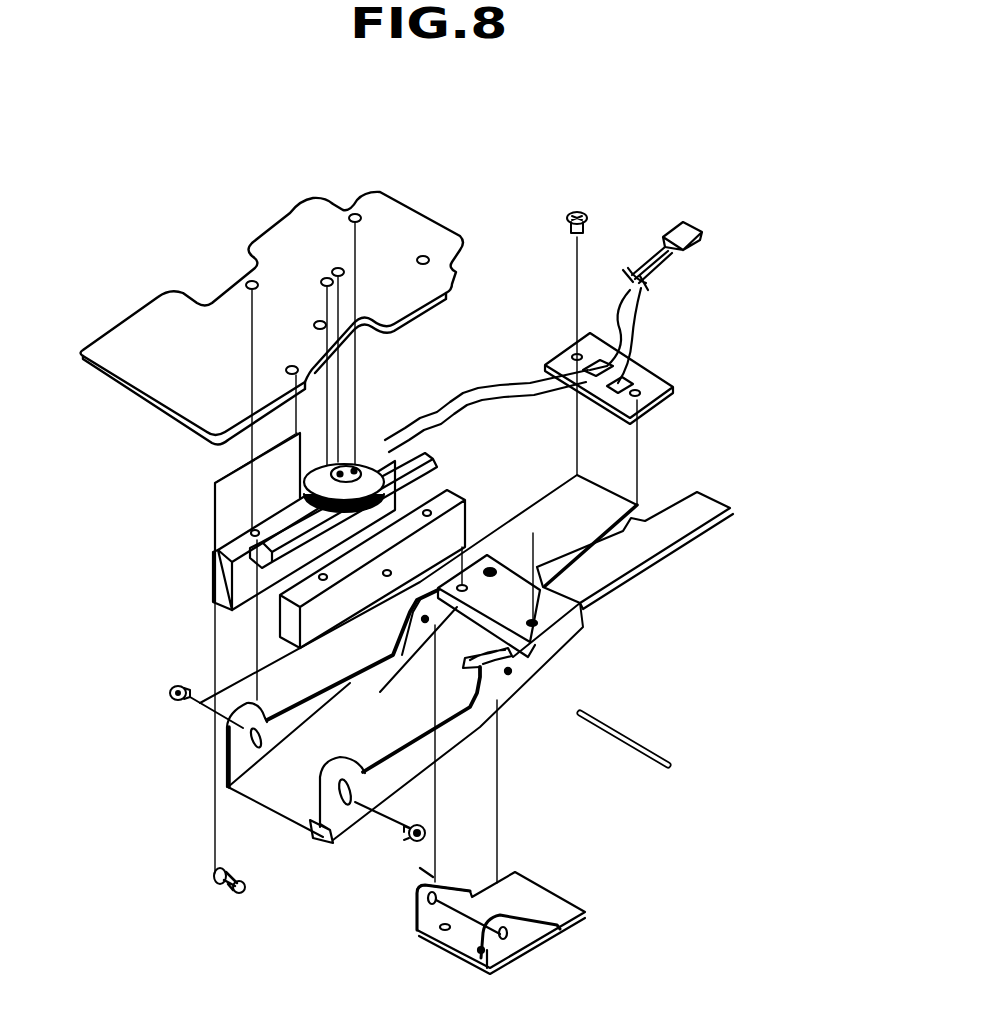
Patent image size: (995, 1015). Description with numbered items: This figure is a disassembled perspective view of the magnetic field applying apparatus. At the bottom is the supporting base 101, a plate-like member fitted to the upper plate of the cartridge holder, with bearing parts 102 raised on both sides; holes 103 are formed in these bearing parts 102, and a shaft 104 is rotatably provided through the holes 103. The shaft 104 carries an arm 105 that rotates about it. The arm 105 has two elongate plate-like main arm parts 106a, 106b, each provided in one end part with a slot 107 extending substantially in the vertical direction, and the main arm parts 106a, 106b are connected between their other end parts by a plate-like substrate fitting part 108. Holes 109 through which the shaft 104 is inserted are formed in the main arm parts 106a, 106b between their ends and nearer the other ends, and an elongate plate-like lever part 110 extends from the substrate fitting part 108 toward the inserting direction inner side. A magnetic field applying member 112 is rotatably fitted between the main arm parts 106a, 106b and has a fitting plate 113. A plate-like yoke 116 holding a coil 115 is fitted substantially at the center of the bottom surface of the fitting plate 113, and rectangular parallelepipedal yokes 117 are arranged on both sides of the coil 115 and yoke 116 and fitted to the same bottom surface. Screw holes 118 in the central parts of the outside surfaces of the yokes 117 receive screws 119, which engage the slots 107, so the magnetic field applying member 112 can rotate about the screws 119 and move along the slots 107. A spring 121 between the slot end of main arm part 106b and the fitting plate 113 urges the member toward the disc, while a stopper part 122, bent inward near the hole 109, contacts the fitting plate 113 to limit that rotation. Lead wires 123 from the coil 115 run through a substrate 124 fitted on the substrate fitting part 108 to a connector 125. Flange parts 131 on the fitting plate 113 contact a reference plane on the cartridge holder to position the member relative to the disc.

The supporting base 101 is at (567, 912).
The bearing parts 102 is at (410, 910).
The holes 103 is at (413, 898).
The shaft 104 is at (660, 748).
The arm 105 is at (600, 630).
The main arm part 106a is at (227, 777).
The main arm part 106b is at (466, 748).
The slots 107 is at (245, 737).
The substrate fitting part 108 is at (533, 555).
The holes 109 is at (425, 621).
The lever part 110 is at (680, 545).
The magnetic field applying member 112 is at (190, 582).
The fitting plate 113 is at (155, 287).
The coil 115 is at (307, 473).
The yoke 116 is at (442, 453).
The yokes 117 is at (233, 547).
The screw holes 118 is at (386, 573).
The screws 119 is at (168, 693).
The spring 121 is at (223, 890).
The stopper part 122 is at (540, 665).
The lead wires 123 is at (503, 397).
The substrate 124 is at (673, 377).
The connector 125 is at (682, 220).
The flange parts 131 is at (300, 222).